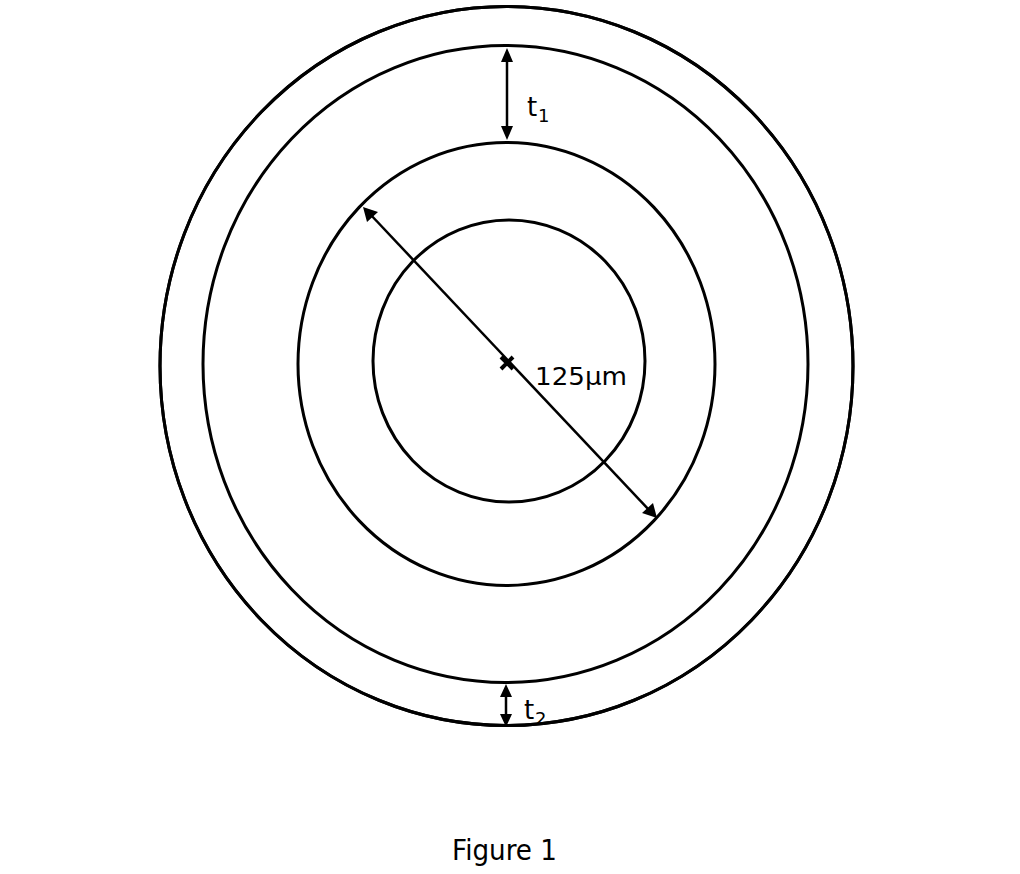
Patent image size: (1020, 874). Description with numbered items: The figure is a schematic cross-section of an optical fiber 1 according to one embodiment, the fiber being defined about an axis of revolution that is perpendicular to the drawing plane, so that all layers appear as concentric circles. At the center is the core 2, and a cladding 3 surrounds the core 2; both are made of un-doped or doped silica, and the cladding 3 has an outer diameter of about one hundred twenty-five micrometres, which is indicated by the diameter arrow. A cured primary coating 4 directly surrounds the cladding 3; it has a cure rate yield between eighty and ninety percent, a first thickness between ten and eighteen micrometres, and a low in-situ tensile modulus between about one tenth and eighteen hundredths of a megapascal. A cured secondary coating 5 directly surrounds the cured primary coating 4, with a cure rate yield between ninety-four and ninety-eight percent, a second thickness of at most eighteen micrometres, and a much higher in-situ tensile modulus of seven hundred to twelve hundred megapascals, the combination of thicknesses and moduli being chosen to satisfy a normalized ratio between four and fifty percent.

The optical fiber 1 is at (118, 251).
The core 2 is at (607, 333).
The cladding 3 is at (673, 462).
The cured primary coating 4 is at (257, 455).
The cured secondary coating 5 is at (272, 585).